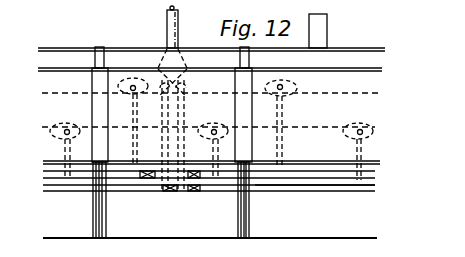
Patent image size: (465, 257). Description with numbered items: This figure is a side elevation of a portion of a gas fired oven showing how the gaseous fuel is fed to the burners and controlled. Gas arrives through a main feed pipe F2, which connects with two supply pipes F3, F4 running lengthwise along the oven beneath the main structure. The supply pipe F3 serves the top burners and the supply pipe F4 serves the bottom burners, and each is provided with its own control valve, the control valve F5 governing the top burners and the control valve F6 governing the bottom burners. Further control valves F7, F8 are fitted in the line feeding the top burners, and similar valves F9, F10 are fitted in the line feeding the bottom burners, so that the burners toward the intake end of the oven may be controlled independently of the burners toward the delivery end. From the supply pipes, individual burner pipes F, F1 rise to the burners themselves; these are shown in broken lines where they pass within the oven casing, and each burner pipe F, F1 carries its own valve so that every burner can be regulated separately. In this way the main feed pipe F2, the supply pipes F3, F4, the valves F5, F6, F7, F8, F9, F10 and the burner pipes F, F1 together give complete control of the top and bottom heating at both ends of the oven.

The pipe F is at (62, 148).
The pipe F1 is at (301, 113).
The main feed pipe F2 is at (176, 9).
The supply pipe F3 is at (49, 175).
The supply pipe F4 is at (292, 186).
The control valve F5 is at (160, 80).
The control valve F6 is at (180, 76).
The control valve F7 is at (143, 179).
The control valve F8 is at (205, 180).
The valve F9 is at (167, 191).
The valve F10 is at (198, 191).